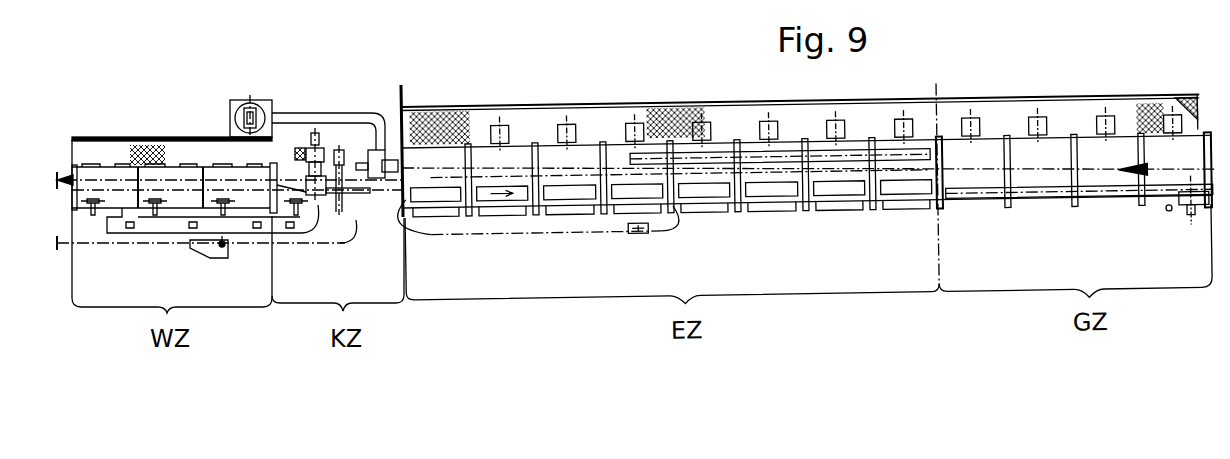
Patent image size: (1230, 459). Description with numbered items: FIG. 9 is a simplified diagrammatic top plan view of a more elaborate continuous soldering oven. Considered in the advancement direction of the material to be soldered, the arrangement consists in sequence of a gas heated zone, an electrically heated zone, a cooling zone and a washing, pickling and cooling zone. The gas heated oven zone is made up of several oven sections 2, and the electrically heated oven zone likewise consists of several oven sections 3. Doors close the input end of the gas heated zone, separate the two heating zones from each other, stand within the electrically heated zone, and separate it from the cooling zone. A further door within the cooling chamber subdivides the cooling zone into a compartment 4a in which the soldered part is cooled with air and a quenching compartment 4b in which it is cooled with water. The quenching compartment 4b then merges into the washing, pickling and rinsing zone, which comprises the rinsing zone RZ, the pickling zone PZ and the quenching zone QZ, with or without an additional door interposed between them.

The oven sections 2 is at (1028, 160).
The oven sections 3 is at (515, 158).
The compartment 4a is at (355, 177).
The quenching compartment 4b is at (288, 175).
The rinsing zone RZ is at (108, 165).
The pickling zone PZ is at (176, 165).
The quenching zone QZ is at (236, 167).